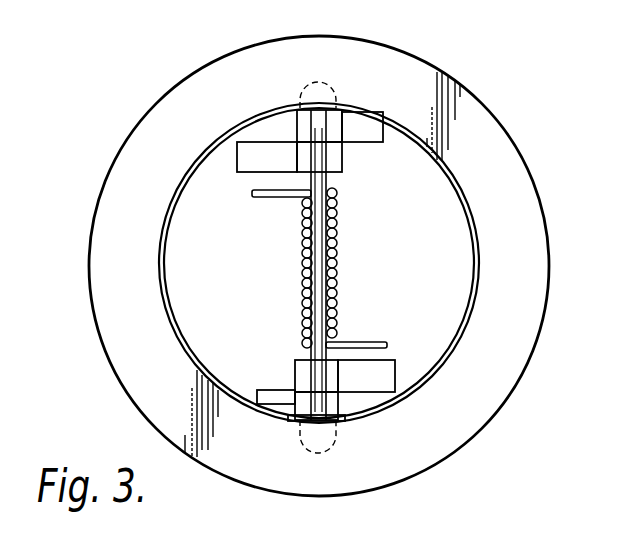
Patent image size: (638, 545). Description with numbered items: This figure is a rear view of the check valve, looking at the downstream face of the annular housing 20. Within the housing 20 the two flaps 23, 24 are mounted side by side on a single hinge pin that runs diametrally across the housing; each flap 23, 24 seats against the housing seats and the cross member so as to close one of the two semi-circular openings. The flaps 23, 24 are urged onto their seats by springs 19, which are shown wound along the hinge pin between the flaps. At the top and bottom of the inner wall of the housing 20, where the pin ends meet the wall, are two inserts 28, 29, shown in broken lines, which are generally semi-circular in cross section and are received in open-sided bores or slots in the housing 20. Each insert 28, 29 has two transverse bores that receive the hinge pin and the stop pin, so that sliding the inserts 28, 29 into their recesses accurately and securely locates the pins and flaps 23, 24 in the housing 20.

The springs 19 is at (334, 255).
The annular housing 20 is at (477, 402).
The flap 23 is at (250, 275).
The flap 24 is at (415, 275).
The insert 28 is at (332, 88).
The insert 29 is at (305, 447).